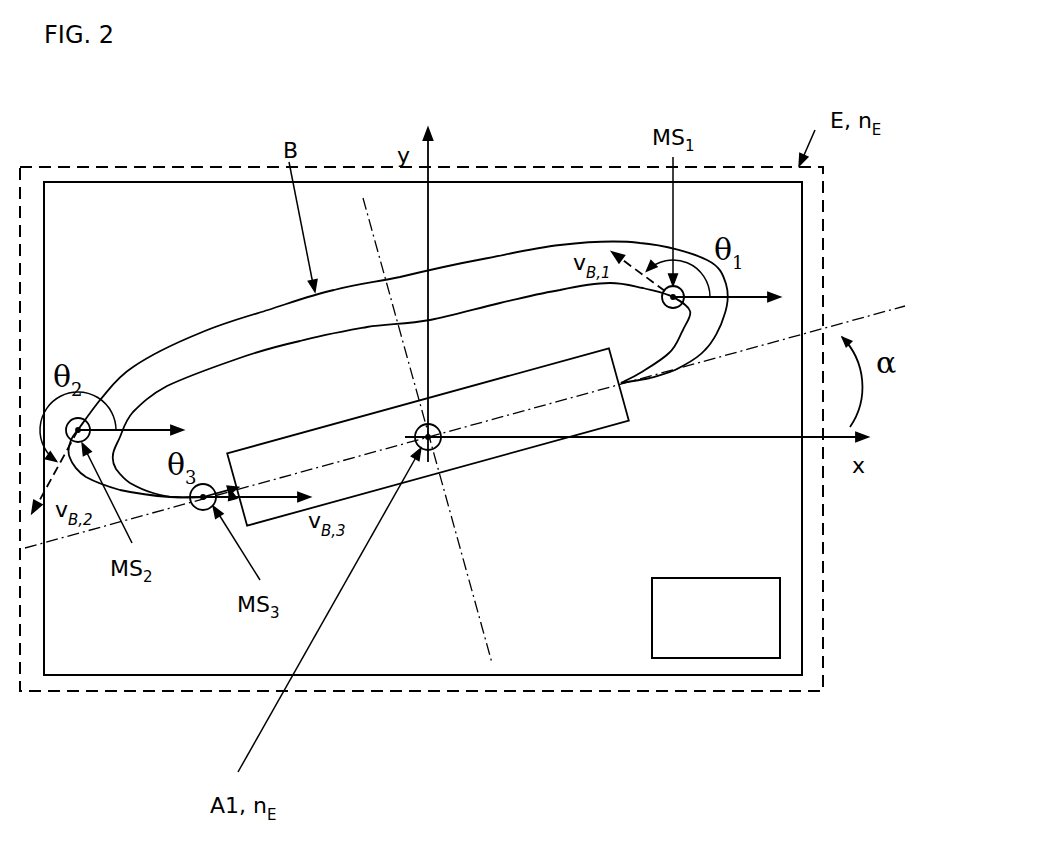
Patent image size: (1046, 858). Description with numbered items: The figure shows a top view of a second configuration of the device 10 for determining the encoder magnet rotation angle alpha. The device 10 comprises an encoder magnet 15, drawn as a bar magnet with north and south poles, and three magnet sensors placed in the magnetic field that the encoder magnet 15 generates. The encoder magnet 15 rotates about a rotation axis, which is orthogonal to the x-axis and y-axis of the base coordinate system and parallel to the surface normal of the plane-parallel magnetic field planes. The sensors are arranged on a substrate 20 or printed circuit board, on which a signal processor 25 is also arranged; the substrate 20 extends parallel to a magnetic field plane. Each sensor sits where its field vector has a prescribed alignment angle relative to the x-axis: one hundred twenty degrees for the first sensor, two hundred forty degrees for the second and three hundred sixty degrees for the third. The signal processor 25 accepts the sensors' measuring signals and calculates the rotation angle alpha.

The device 10 is at (744, 122).
The encoder magnet 15 is at (428, 436).
The substrate 20 is at (557, 642).
The signal processor 25 is at (716, 618).